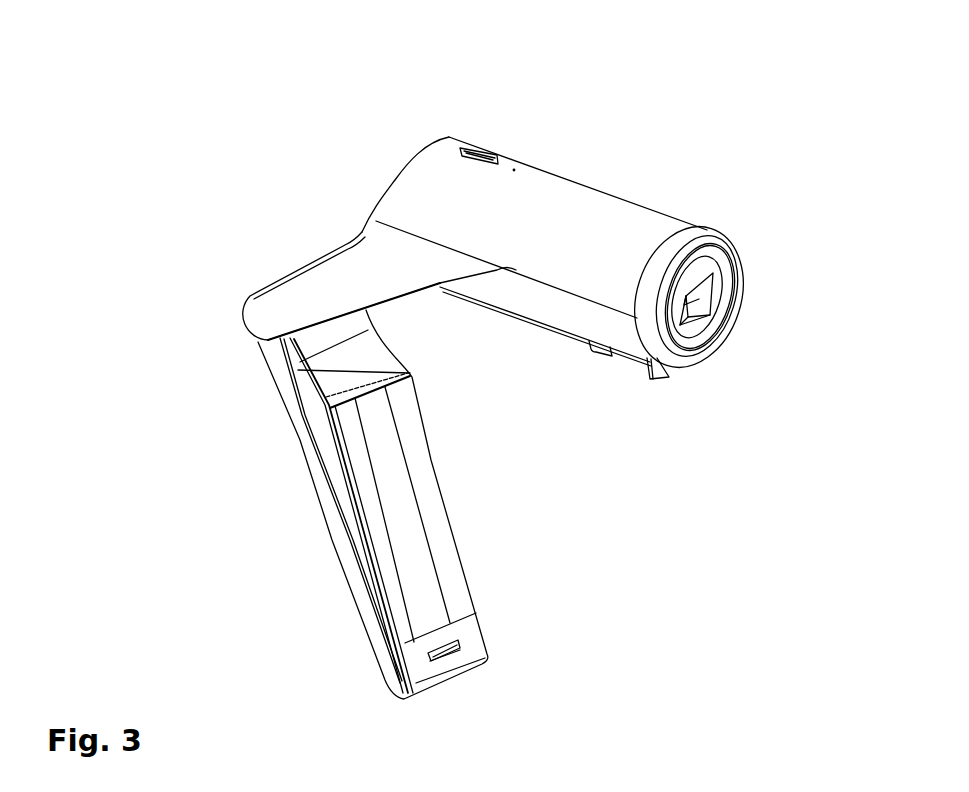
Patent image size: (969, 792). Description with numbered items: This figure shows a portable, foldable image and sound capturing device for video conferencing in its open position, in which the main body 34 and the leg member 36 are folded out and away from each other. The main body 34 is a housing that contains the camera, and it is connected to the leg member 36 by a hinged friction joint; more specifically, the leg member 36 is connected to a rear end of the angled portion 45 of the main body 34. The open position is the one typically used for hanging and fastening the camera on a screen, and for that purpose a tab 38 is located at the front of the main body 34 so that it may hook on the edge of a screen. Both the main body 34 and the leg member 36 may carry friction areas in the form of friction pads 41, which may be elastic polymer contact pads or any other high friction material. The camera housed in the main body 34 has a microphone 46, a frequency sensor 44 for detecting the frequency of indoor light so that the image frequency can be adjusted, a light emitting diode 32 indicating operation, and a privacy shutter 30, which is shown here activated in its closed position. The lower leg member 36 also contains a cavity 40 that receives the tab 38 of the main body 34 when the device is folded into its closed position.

The privacy shutter 30 is at (708, 288).
The Light Emitting Diode (LED) 32 is at (513, 170).
The main body 34 is at (576, 181).
The leg member 36 is at (450, 522).
The tab 38 is at (668, 377).
The cavity 40 is at (487, 657).
The friction pads 41 is at (590, 343).
The frequency sensor 44 is at (458, 146).
The angled portion 45 is at (288, 267).
The microphone 46 is at (498, 163).